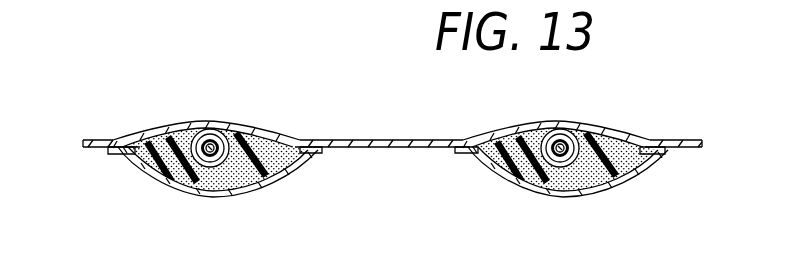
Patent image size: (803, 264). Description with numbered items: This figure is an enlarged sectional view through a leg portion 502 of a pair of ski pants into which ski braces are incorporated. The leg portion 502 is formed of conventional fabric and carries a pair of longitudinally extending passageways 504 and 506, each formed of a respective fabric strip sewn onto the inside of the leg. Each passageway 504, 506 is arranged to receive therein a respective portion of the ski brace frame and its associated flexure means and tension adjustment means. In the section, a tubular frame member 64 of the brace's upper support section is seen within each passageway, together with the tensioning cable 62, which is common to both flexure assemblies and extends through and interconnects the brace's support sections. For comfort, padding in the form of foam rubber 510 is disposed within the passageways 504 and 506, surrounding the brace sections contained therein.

The tensioning cable 62 is at (210, 140).
The tubular frame member 64 is at (218, 142).
The leg portion 502 is at (383, 138).
The passageway 504 is at (229, 191).
The passageway 506 is at (542, 191).
The foam rubber 510 is at (268, 152).